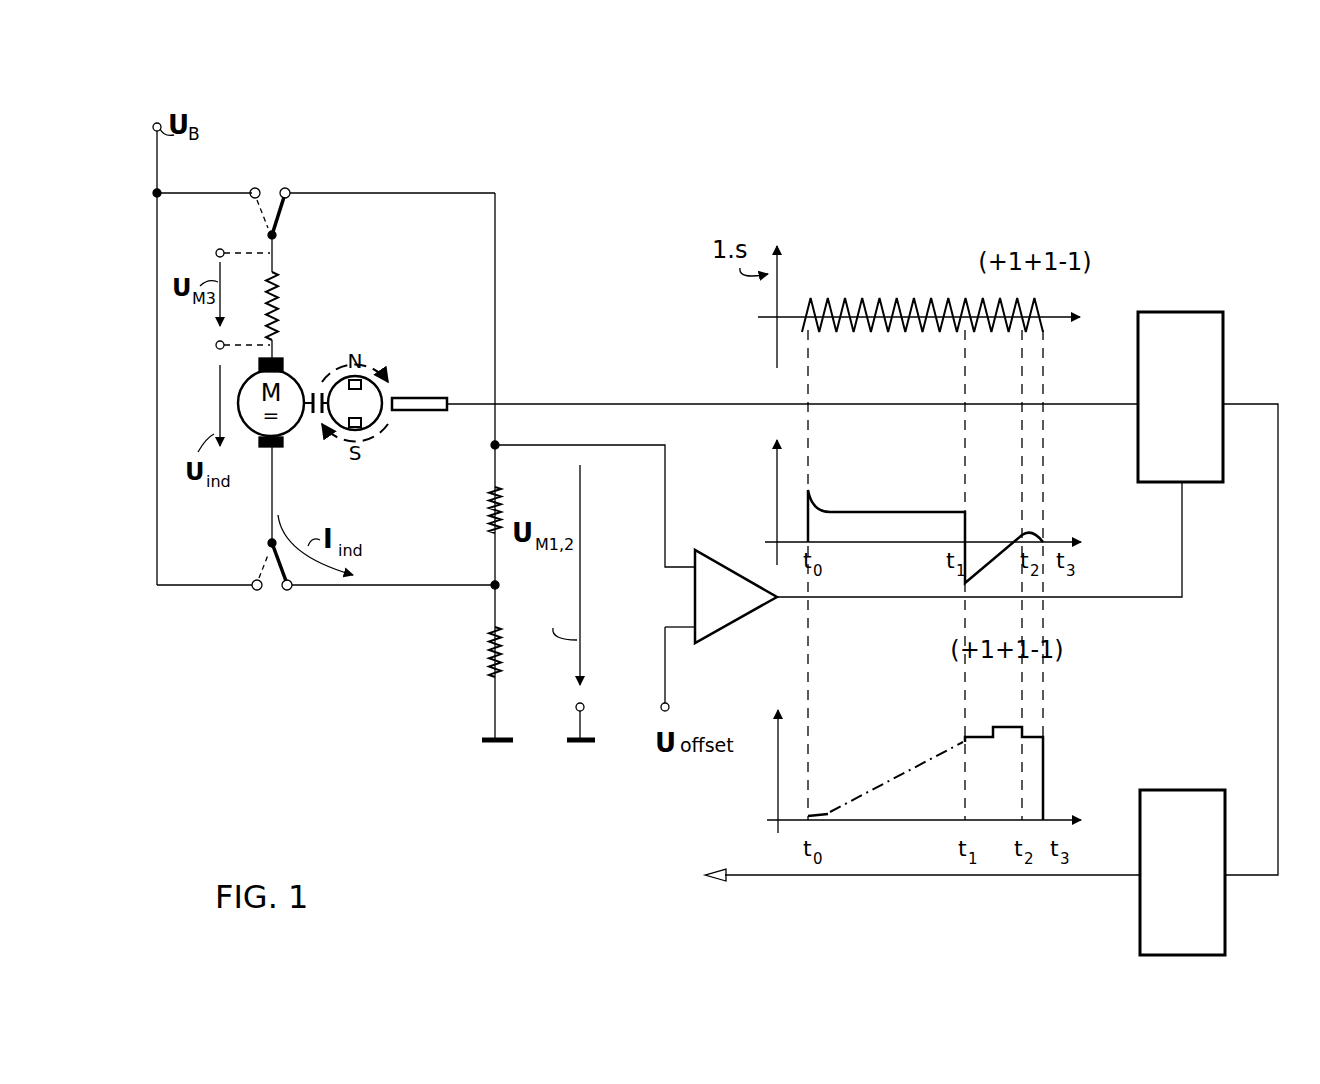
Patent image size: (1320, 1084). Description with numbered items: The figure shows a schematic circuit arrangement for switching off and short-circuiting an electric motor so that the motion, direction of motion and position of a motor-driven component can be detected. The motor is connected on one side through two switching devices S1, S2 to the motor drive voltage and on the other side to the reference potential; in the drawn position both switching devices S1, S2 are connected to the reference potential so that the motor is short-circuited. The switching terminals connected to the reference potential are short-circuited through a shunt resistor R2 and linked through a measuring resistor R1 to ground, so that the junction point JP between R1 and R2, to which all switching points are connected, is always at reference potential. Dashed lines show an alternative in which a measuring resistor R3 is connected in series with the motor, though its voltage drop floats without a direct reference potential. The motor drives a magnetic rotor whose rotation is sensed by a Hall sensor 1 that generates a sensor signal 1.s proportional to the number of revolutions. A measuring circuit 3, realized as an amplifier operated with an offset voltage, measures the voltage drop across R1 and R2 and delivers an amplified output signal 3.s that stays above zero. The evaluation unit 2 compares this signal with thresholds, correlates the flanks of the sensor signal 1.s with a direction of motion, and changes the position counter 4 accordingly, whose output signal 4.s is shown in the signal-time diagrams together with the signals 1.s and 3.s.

The Hall sensor 1 is at (433, 394).
The evaluation unit 2 is at (1225, 350).
The measuring circuit 3 is at (714, 642).
The position counter 4 is at (1227, 905).
The sensor signal 1.s is at (556, 402).
The amplified output signal 3.s is at (1165, 602).
The position counter output signal 4.s is at (1097, 878).
The switching device S1 is at (268, 185).
The switching device S2 is at (277, 600).
The measuring resistor R1 is at (486, 654).
The shunt resistor R2 is at (486, 510).
The measuring resistor R3 is at (284, 300).
The junction point JP is at (501, 580).